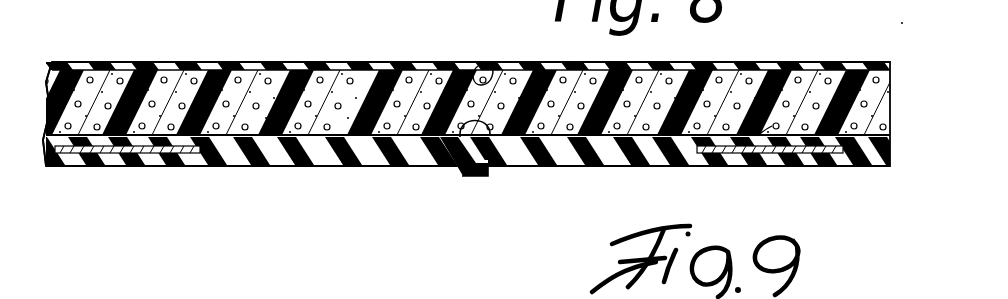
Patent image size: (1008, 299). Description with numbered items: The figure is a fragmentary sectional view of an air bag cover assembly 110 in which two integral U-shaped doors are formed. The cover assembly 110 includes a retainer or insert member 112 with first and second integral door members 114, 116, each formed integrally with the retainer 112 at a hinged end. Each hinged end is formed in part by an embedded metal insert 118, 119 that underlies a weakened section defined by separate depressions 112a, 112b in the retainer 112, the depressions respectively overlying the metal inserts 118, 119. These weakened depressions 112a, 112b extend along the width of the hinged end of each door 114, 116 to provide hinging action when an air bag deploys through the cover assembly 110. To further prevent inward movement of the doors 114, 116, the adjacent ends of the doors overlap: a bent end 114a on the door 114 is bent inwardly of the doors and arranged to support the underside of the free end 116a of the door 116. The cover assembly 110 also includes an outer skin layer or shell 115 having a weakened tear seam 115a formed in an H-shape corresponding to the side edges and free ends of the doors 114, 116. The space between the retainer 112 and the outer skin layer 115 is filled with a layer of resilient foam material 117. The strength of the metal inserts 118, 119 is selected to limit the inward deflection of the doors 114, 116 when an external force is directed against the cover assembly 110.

The cover assembly 110 is at (358, 60).
The retainer or insert member 112 is at (49, 153).
The depression 112a is at (124, 133).
The depression 112b is at (766, 137).
The first integral door member 114 is at (368, 150).
The bent end 114a is at (466, 177).
The outer skin layer or shell 115 is at (293, 14).
The weakened tear seam 115a is at (478, 66).
The second integral door member 116 is at (592, 148).
The free end 116a is at (490, 134).
The layer of resilient foam material 117 is at (92, 82).
The metal insert 118 is at (176, 153).
The metal insert 119 is at (732, 153).